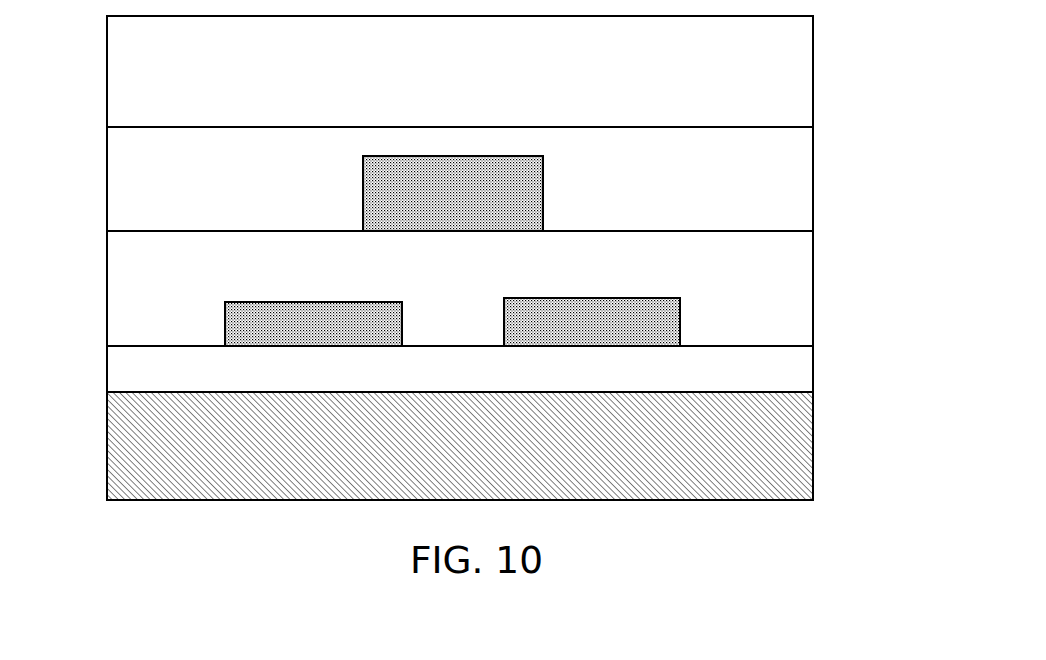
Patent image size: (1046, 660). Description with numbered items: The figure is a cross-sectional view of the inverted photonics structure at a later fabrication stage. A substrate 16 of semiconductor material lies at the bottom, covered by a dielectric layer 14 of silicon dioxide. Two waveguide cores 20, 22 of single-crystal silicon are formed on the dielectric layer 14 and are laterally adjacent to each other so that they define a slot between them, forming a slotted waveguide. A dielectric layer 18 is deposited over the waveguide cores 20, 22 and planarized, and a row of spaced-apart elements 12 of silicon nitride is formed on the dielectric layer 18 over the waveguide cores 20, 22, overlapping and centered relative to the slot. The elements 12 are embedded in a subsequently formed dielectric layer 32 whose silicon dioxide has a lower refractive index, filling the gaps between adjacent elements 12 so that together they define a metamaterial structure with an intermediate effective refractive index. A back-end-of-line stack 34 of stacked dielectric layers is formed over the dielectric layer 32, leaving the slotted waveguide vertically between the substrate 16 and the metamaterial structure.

The elements 12 is at (502, 190).
The dielectric layer 14 is at (765, 371).
The substrate 16 is at (142, 448).
The dielectric layer 18 is at (143, 273).
The waveguide core 20 is at (278, 320).
The waveguide core 22 is at (640, 320).
The dielectric layer 32 is at (137, 182).
The back-end-of-line stack 34 is at (755, 74).